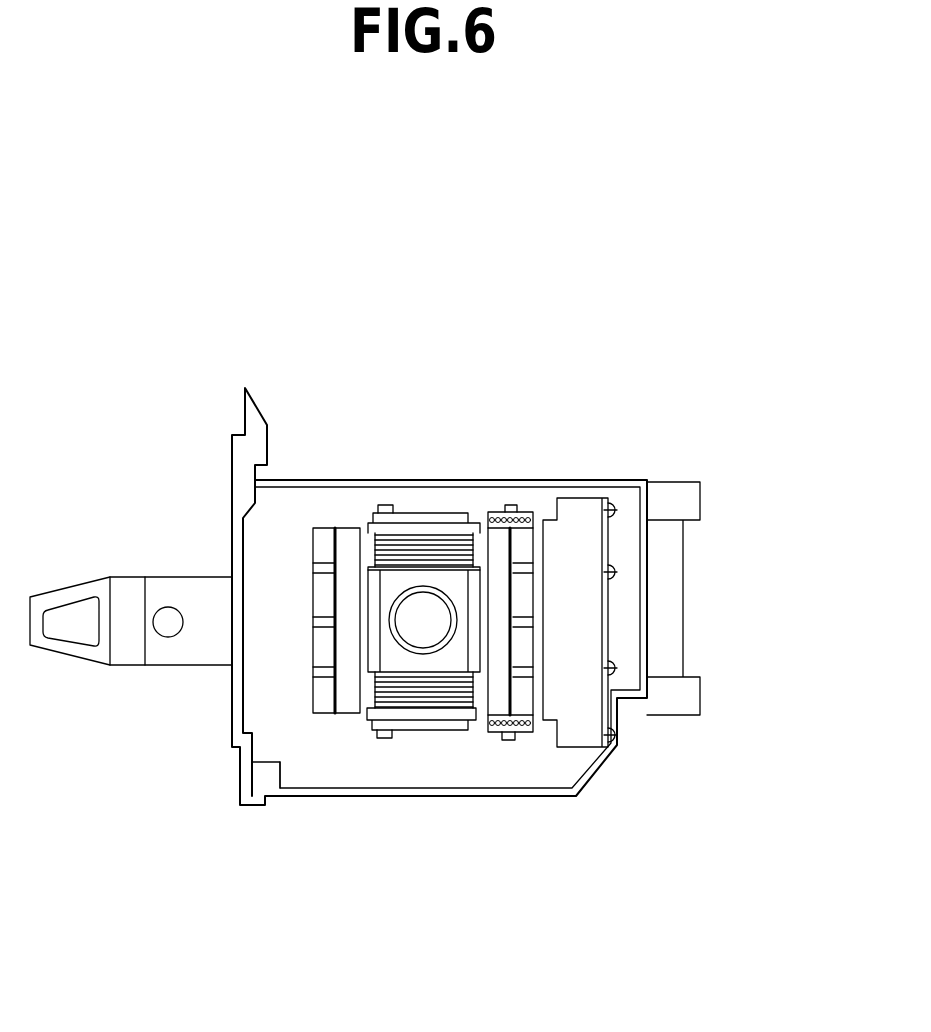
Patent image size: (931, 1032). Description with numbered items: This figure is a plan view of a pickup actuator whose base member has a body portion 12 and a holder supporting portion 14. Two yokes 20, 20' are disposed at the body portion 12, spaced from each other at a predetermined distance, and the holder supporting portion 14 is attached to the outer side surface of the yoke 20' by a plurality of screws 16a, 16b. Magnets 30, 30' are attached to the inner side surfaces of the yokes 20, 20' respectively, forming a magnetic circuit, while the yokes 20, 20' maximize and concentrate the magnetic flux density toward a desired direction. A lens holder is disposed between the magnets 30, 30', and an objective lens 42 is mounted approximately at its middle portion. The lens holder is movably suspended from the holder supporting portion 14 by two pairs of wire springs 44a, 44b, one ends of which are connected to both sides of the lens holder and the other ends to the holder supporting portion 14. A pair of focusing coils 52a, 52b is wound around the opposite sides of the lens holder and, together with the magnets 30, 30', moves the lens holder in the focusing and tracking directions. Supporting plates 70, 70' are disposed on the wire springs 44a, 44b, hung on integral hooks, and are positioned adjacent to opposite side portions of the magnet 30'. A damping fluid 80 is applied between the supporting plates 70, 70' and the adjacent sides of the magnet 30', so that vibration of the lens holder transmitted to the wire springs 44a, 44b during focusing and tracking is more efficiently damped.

The body portion 12 is at (685, 497).
The holder supporting portion 14 is at (585, 617).
The screw 16a is at (612, 572).
The screw 16b is at (612, 668).
The yoke 20 is at (299, 515).
The yoke 20' is at (613, 570).
The magnet 30 is at (340, 538).
The magnet 30' is at (592, 541).
The objective lens 42 is at (418, 622).
The wire spring 44a is at (467, 510).
The wire spring 44b is at (463, 722).
The focusing coil 52a is at (422, 543).
The focusing coil 52b is at (400, 695).
The supporting plate 70 is at (521, 421).
The supporting plate 70' is at (522, 801).
The damping fluid 80 is at (527, 515).